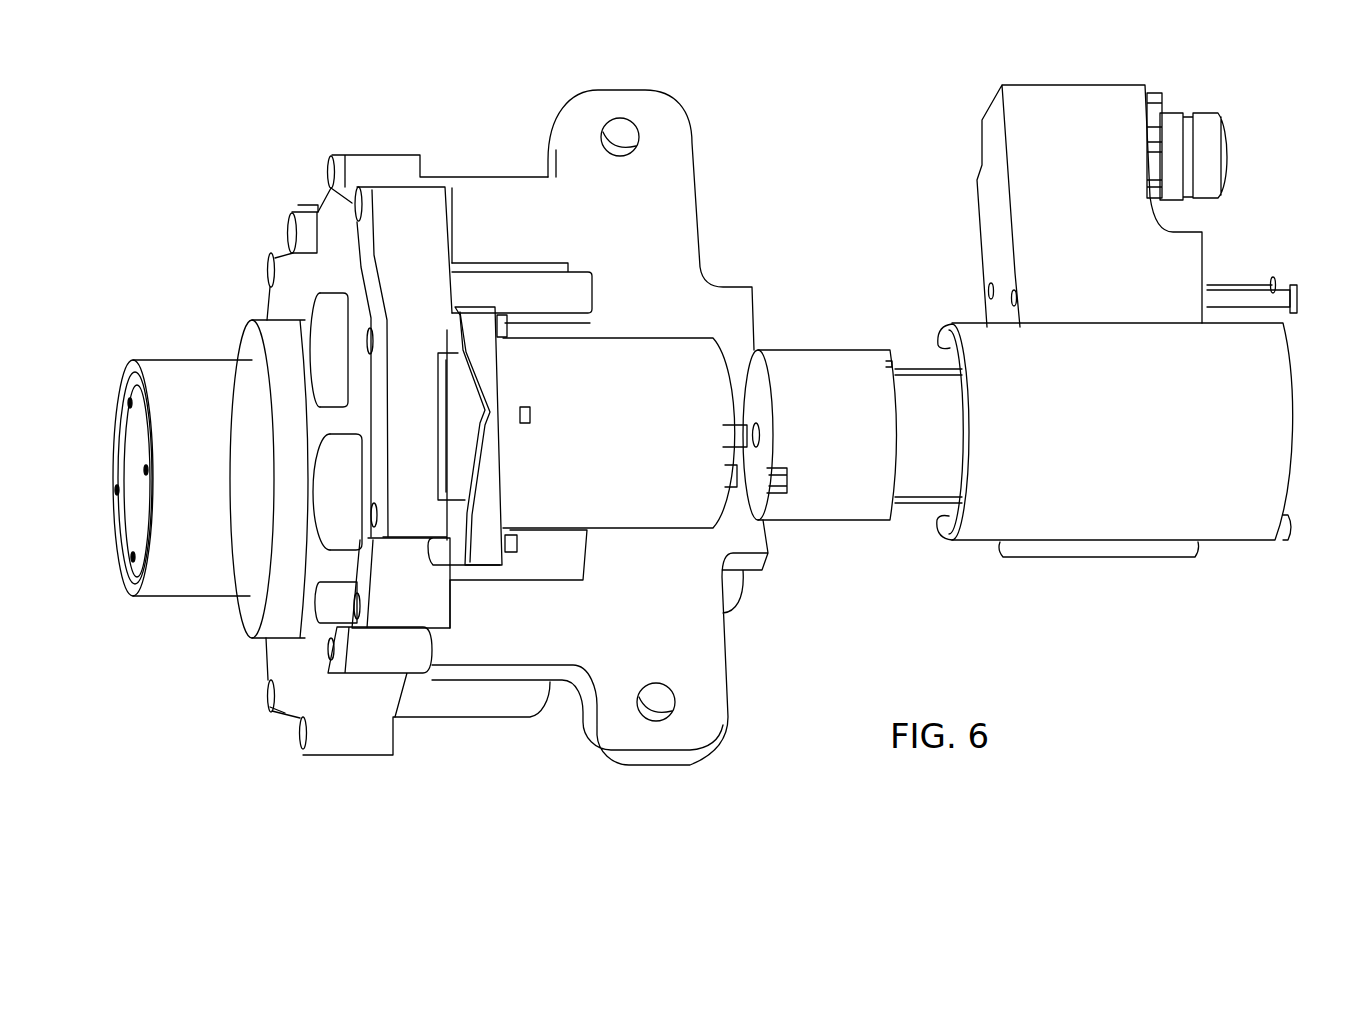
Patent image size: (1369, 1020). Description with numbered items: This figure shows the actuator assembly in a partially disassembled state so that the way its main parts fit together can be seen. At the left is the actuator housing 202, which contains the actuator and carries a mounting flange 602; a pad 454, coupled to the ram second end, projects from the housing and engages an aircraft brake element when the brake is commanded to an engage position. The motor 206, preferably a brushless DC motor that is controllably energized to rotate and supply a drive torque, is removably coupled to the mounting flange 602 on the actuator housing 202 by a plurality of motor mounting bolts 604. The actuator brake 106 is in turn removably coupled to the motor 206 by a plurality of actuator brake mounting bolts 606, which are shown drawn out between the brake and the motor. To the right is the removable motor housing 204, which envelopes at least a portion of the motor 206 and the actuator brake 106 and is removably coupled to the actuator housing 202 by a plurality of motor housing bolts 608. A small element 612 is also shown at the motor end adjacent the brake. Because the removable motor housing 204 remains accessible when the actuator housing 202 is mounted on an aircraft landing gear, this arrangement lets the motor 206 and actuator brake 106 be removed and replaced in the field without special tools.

The actuator brake 106 is at (852, 437).
The actuator housing 202 is at (312, 280).
The removable motor housing 204 is at (1250, 413).
The motor 206 is at (675, 462).
The pad 454 is at (130, 447).
The mounting flange 602 is at (470, 465).
The motor mounting bolts 604 is at (507, 327).
The actuator brake mounting bolts 606 is at (910, 367).
The motor housing bolts 608 is at (1237, 283).
The shaft 612 is at (733, 434).